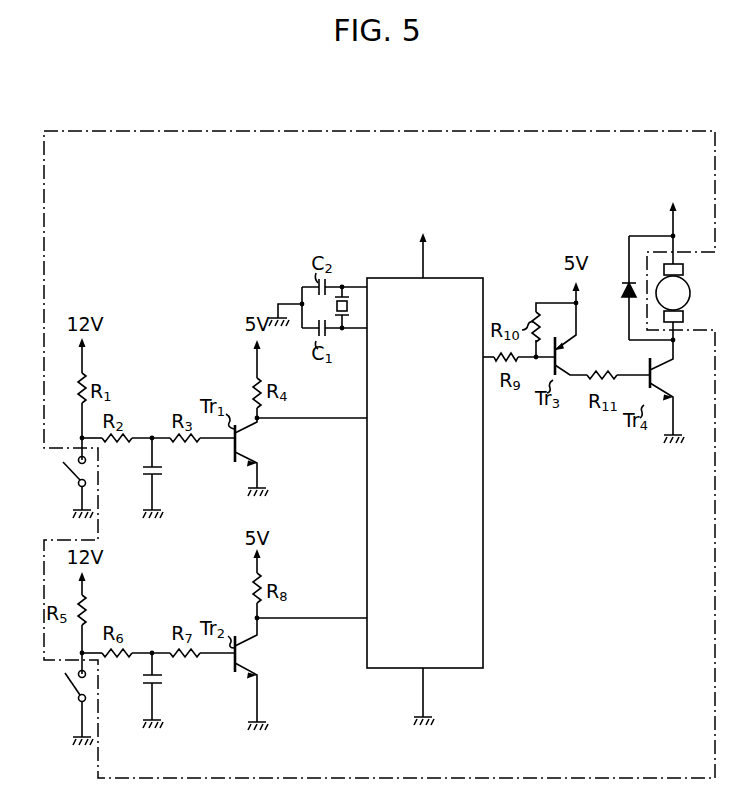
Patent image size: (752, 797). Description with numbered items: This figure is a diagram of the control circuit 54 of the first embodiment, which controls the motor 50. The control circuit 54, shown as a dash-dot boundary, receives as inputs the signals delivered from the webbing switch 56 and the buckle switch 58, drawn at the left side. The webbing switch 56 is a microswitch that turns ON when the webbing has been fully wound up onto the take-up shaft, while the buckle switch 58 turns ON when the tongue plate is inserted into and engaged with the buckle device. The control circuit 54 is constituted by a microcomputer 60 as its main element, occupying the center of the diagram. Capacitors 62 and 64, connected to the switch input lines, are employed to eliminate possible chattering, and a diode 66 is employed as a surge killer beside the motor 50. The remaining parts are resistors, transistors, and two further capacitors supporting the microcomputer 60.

The motor 50 is at (691, 297).
The control circuit 54 is at (256, 130).
The webbing switch 56 is at (70, 472).
The buckle switch 58 is at (72, 688).
The microcomputer 60 is at (483, 486).
The capacitor 62 is at (165, 471).
The capacitor 64 is at (164, 679).
The diode 66 is at (620, 293).